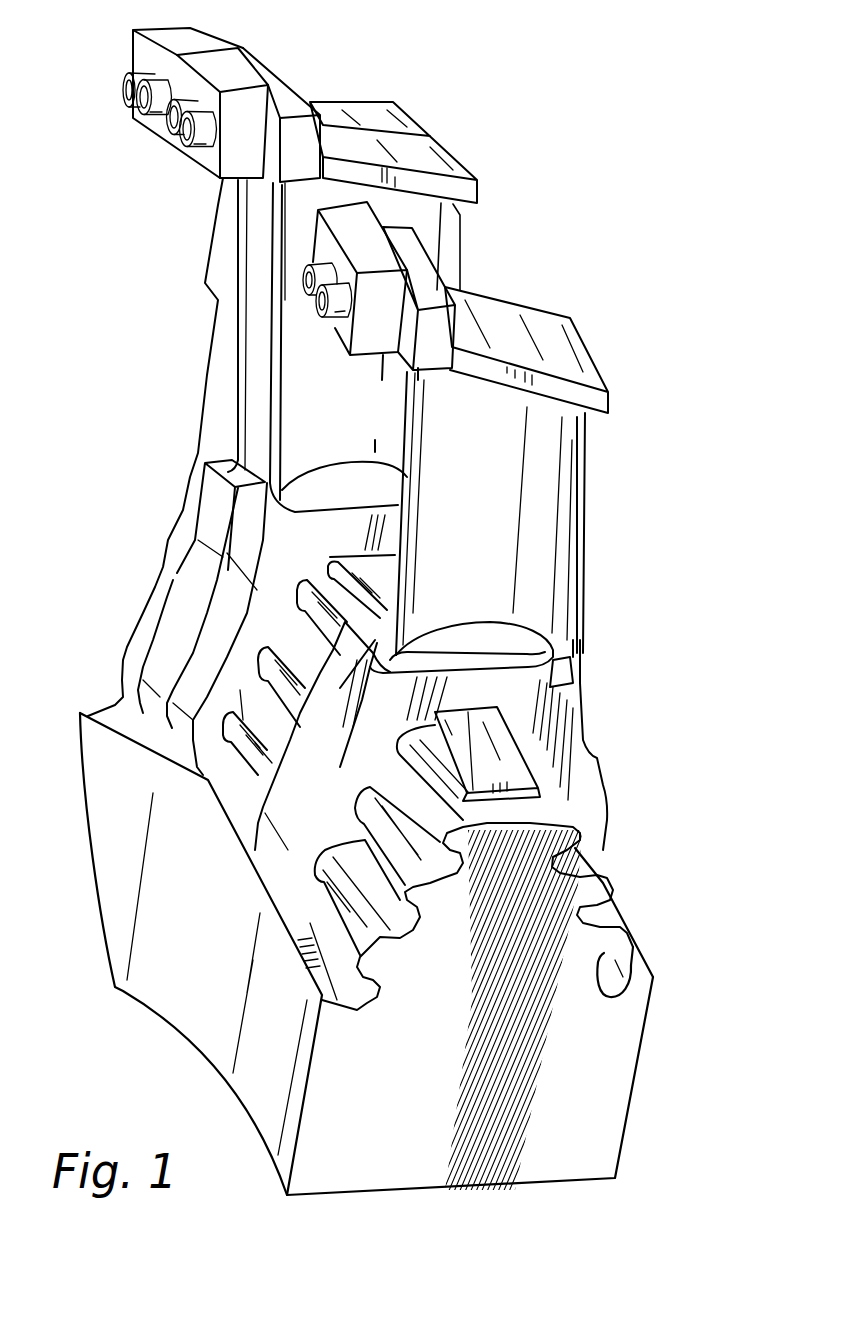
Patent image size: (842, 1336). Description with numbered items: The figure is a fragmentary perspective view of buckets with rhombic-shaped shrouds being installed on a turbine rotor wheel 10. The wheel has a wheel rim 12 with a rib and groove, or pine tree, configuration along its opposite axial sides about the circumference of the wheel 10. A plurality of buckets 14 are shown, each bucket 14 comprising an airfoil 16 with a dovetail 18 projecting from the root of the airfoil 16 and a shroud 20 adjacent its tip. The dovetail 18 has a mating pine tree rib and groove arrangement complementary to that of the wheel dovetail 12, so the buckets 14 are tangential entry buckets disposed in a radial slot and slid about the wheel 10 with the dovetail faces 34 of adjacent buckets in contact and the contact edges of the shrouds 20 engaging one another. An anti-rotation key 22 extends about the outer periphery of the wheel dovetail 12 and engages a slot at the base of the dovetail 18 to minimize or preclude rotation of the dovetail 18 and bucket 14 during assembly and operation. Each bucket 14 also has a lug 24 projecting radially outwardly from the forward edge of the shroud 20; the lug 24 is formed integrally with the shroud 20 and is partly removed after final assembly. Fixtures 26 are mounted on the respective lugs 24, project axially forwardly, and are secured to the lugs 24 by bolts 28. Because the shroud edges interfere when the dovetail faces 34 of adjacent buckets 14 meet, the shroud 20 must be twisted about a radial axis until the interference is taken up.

The turbine rotor wheel 10 is at (587, 1098).
The wheel rim 12 is at (513, 922).
The bucket 14 is at (670, 648).
The airfoil 16 is at (497, 493).
The dovetail 18 is at (217, 625).
The shroud 20 is at (523, 343).
The anti-rotation key 22 is at (507, 762).
The lug 24 is at (423, 288).
The fixture 26 is at (360, 230).
The bolt 28 is at (310, 270).
The dovetail face 34 is at (297, 540).